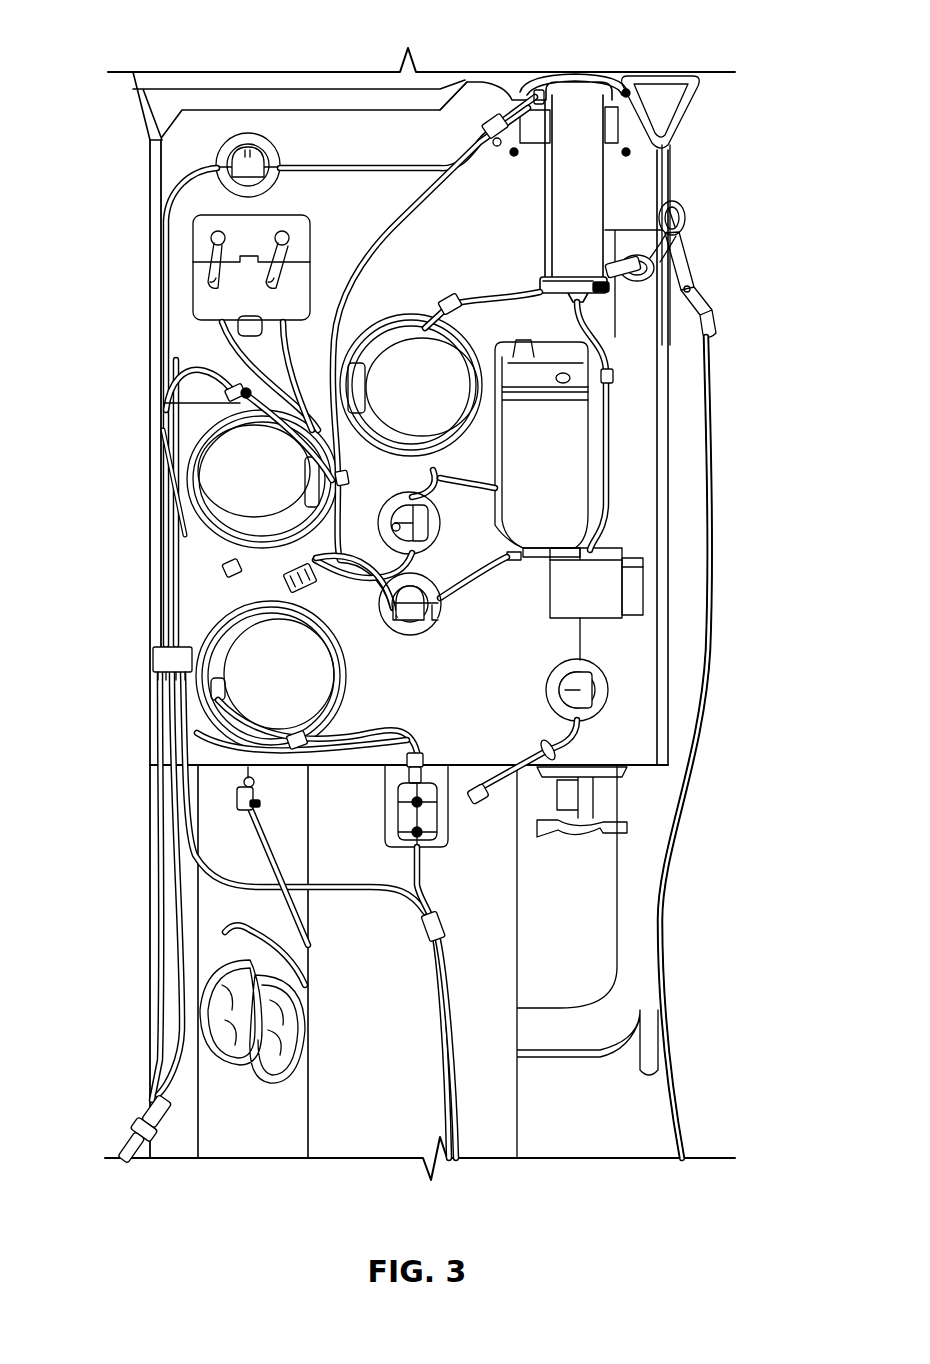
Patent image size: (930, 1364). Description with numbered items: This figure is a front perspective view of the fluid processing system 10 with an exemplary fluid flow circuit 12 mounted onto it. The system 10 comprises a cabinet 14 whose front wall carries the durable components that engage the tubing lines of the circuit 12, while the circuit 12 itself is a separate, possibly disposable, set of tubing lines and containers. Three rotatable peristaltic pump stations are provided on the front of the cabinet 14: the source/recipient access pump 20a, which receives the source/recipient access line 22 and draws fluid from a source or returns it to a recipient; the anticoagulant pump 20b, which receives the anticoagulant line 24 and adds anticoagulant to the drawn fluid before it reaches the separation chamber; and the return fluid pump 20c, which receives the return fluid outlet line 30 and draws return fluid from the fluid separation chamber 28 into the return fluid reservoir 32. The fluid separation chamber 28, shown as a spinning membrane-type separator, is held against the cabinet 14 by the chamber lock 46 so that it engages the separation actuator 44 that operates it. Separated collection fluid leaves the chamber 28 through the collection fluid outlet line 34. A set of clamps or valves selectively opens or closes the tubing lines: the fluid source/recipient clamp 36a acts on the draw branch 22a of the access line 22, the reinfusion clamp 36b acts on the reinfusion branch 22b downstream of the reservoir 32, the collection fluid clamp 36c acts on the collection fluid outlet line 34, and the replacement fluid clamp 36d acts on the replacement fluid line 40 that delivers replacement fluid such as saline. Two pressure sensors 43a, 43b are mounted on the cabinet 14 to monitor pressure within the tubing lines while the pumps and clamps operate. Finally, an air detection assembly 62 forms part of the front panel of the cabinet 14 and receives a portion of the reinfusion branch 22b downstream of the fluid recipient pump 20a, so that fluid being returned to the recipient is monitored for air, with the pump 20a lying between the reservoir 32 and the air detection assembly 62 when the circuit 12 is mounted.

The fluid processing system 10 is at (332, 1092).
The fluid flow circuit 12 is at (185, 172).
The cabinet 14 is at (449, 696).
The source/recipient access pump 20a is at (242, 653).
The anticoagulant pump 20b is at (232, 475).
The return fluid pump 20c is at (393, 383).
The source/recipient access line 22 is at (418, 867).
The draw branch 22a is at (383, 228).
The reinfusion branch 22b is at (458, 597).
The anticoagulant line 24 is at (223, 873).
The fluid separation chamber 28 is at (583, 168).
The return fluid outlet line 30 is at (476, 228).
The return fluid reservoir 32 is at (547, 477).
The collection fluid outlet line 34 is at (612, 443).
The fluid source/recipient clamp 36a is at (428, 524).
The reinfusion clamp 36b is at (300, 585).
The collection fluid clamp 36c is at (605, 690).
The replacement fluid clamp 36d is at (248, 148).
The replacement fluid line 40 is at (402, 162).
The pressure sensor 43a is at (197, 243).
The pressure sensor 43b is at (202, 240).
The separation actuator 44 is at (615, 75).
The chamber lock 46 is at (690, 300).
The air detection assembly 62 is at (385, 812).